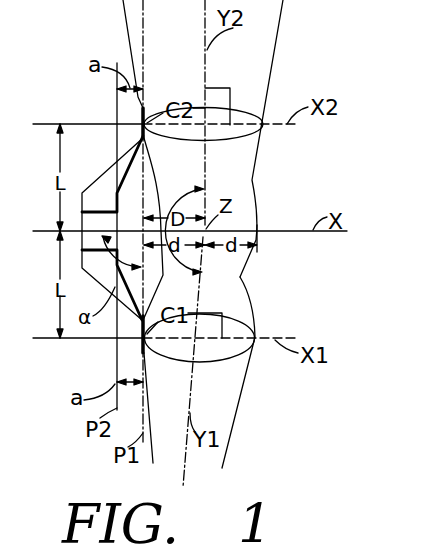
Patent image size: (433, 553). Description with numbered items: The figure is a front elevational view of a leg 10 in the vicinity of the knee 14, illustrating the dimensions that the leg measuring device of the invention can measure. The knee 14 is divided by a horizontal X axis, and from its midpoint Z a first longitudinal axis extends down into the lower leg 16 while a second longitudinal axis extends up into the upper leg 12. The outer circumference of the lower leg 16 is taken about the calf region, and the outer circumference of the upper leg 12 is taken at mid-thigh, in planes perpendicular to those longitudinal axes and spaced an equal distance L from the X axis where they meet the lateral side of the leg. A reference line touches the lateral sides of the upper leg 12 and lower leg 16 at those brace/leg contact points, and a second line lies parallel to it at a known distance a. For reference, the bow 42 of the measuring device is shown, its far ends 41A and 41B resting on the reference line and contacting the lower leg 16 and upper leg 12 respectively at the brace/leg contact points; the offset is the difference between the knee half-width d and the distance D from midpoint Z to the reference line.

The leg 10 is at (235, 234).
The upper leg 12 is at (127, 29).
The knee 14 is at (257, 212).
The lower leg 16 is at (255, 344).
The far end of the bow 41A is at (140, 348).
The far end of the bow 41B is at (140, 115).
The bow 42 is at (107, 172).